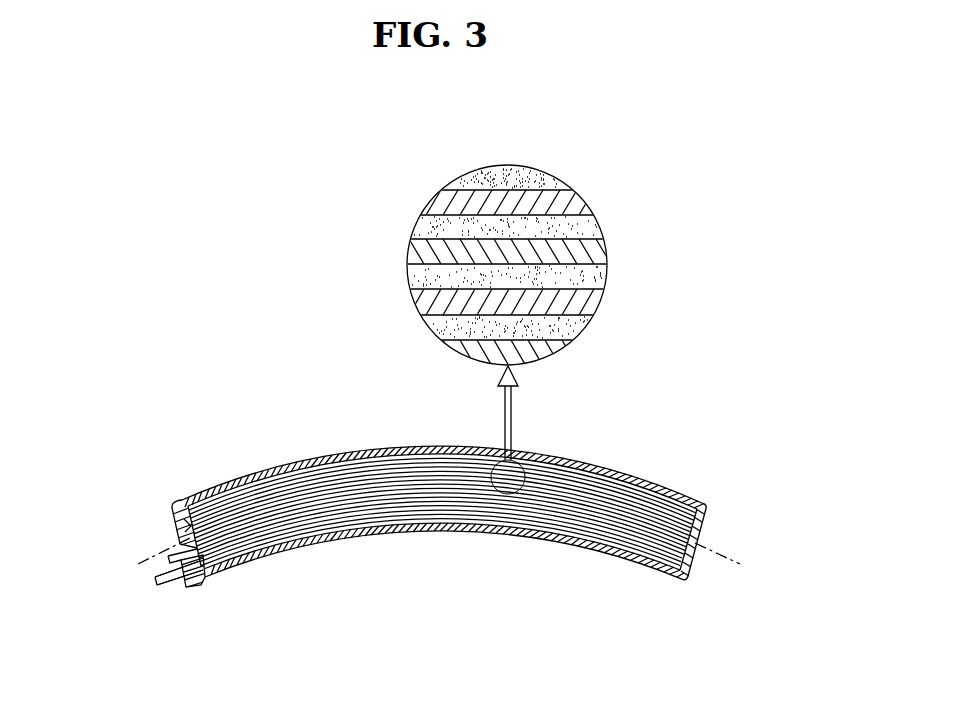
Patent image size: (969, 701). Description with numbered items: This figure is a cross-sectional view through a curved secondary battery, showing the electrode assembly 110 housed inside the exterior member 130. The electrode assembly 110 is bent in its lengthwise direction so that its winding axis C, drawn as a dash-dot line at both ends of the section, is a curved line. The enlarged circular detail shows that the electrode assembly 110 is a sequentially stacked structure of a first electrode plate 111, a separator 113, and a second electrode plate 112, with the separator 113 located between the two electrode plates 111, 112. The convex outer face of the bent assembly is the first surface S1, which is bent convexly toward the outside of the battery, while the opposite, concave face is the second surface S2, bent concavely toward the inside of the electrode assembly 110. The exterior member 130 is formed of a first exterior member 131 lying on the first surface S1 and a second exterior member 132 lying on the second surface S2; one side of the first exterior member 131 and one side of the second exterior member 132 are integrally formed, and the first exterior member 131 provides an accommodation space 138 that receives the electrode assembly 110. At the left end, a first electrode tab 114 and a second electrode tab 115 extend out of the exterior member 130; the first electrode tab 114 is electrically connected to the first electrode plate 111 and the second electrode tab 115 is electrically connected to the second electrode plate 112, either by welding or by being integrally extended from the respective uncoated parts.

The electrode assembly 110 is at (593, 503).
The first electrode plate 111 is at (582, 204).
The second electrode plate 112 is at (590, 257).
The separator 113 is at (590, 230).
The first electrode tab 114 is at (153, 578).
The second electrode tab 115 is at (179, 573).
The exterior member 130 is at (298, 403).
The first exterior member 131 is at (230, 483).
The second exterior member 132 is at (308, 542).
The accommodation space 138 is at (172, 516).
The first surface S1 is at (443, 447).
The second surface S2 is at (442, 540).
The winding axis C is at (449, 559).